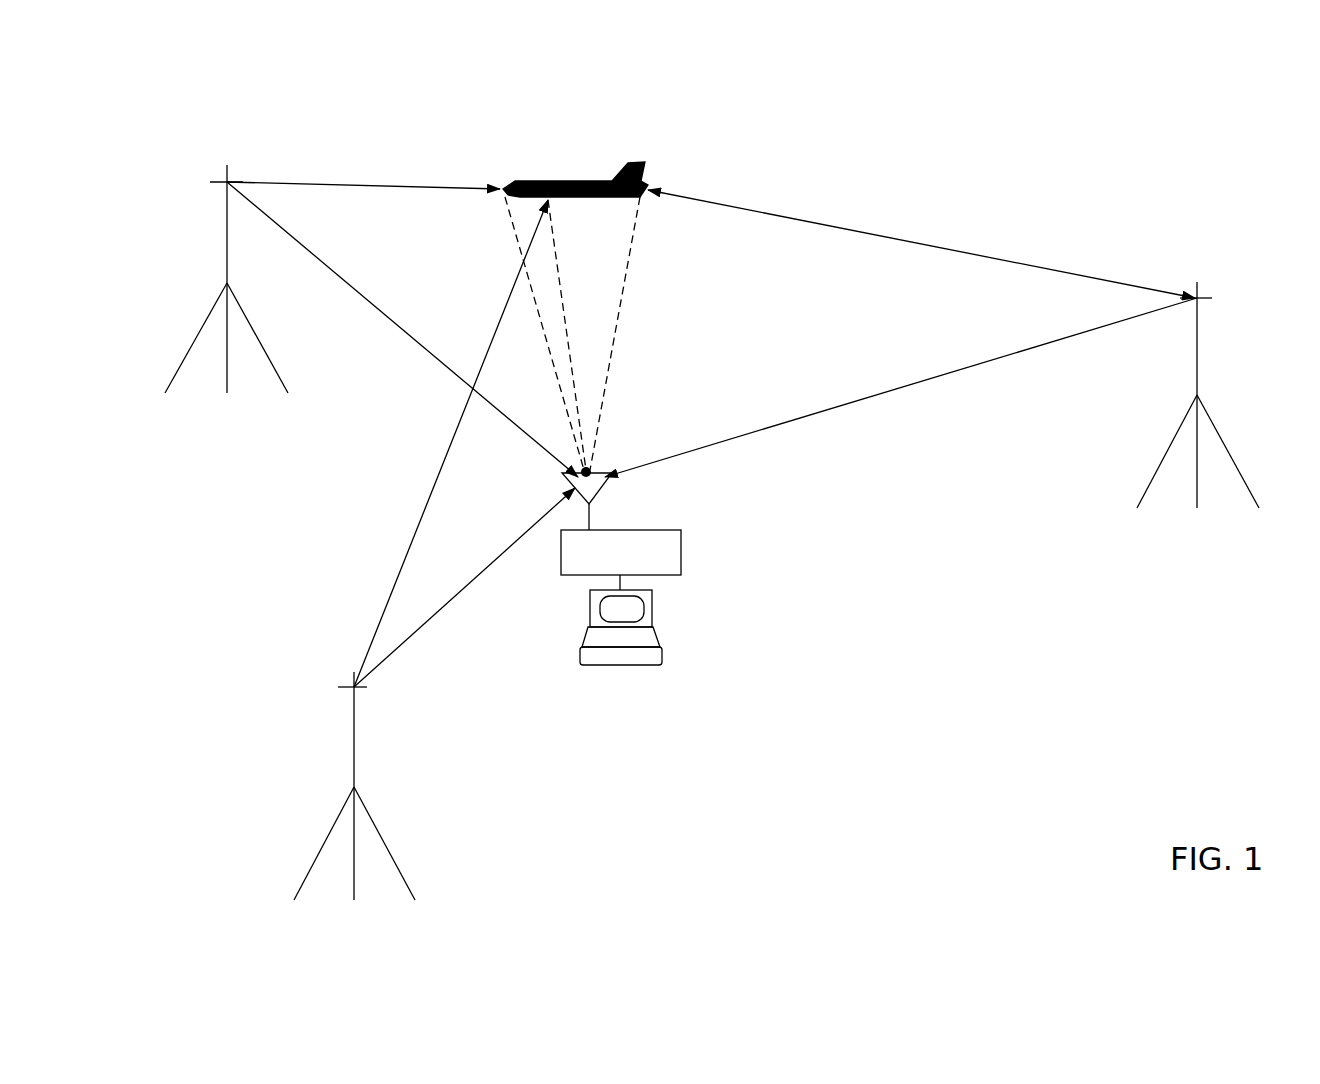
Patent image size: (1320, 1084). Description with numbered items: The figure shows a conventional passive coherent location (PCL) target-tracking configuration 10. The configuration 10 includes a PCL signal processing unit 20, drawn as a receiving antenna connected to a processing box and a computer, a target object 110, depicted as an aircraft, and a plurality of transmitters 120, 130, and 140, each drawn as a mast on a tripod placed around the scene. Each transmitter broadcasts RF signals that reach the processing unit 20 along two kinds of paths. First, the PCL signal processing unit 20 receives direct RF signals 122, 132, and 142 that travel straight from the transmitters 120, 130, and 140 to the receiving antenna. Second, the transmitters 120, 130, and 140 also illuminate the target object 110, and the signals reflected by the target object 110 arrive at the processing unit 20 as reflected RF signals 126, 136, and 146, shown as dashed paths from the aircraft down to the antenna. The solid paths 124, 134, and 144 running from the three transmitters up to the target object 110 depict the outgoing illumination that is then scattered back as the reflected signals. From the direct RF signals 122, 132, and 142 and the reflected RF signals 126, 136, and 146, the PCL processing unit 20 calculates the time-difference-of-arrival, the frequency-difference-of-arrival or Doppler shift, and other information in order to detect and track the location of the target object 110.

The PCL target-tracking configuration 10 is at (1063, 148).
The target object 110 is at (643, 163).
The transmitter 120 is at (227, 258).
The transmitter 130 is at (354, 755).
The transmitter 140 is at (1197, 378).
The signal path from first station to aircraft 124 is at (383, 187).
The direct RF signal 122 is at (346, 282).
The reflected RF signal 126 is at (511, 226).
The reflected RF signal 136 is at (557, 264).
The reflected RF signal 146 is at (619, 318).
The signal path from second station to aircraft 134 is at (430, 497).
The direct RF signal 132 is at (475, 587).
The signal path from third station to aircraft 144 is at (852, 231).
The direct RF signal 142 is at (840, 406).
The PCL signal processing unit 20 is at (681, 538).